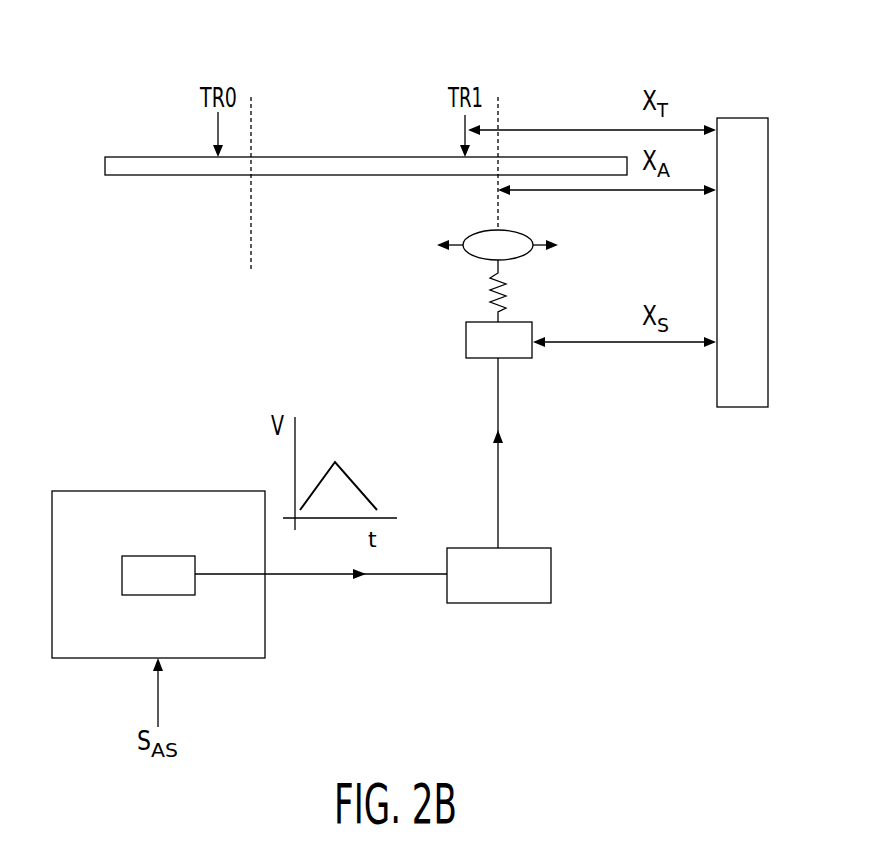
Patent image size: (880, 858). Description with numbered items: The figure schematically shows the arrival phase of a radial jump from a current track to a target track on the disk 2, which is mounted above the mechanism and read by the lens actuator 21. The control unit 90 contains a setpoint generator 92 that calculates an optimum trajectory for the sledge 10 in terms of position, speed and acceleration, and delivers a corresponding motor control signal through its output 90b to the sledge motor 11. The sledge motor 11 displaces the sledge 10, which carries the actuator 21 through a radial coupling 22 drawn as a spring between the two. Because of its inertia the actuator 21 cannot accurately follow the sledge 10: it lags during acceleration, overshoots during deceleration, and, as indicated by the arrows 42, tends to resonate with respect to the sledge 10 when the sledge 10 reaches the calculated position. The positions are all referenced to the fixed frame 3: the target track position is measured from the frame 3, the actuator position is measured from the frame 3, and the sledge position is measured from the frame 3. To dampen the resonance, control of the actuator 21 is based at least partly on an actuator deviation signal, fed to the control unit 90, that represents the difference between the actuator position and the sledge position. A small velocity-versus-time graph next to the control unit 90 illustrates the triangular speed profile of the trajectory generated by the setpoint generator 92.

The disk 2 is at (145, 163).
The frame 3 is at (740, 137).
The sledge 10 is at (477, 338).
The sledge motor 11 is at (538, 577).
The actuator 21 is at (478, 239).
The radial coupling 22 is at (490, 289).
The arrows 42 is at (547, 242).
The control unit 90 is at (94, 533).
The control unit output 90b is at (255, 567).
The setpoint generator 92 is at (158, 572).